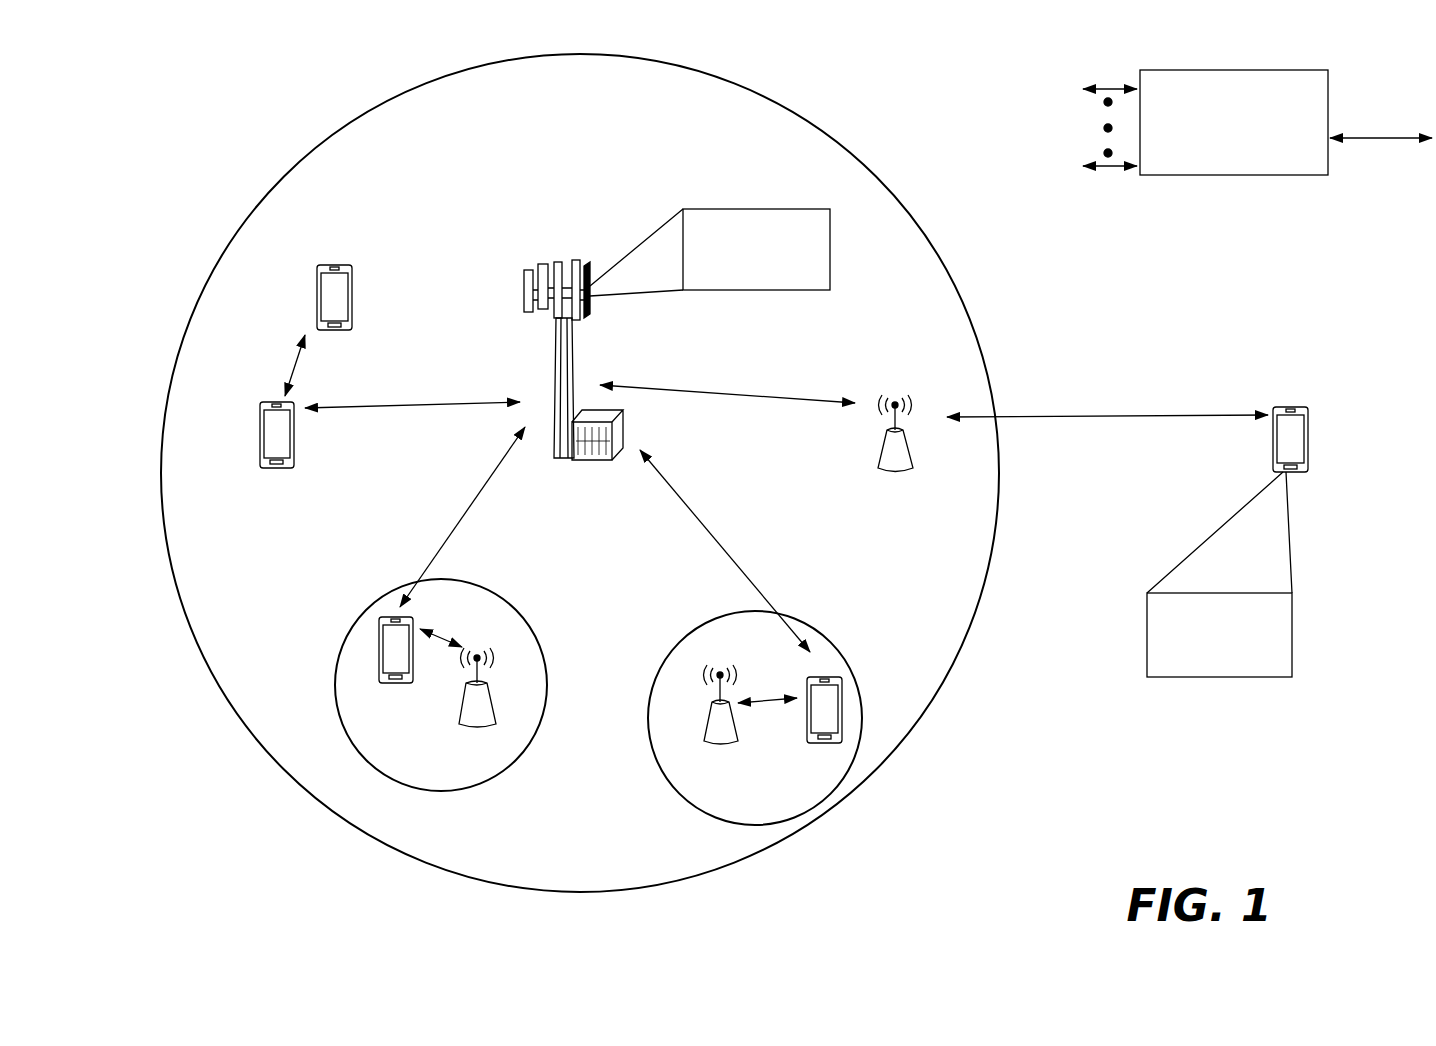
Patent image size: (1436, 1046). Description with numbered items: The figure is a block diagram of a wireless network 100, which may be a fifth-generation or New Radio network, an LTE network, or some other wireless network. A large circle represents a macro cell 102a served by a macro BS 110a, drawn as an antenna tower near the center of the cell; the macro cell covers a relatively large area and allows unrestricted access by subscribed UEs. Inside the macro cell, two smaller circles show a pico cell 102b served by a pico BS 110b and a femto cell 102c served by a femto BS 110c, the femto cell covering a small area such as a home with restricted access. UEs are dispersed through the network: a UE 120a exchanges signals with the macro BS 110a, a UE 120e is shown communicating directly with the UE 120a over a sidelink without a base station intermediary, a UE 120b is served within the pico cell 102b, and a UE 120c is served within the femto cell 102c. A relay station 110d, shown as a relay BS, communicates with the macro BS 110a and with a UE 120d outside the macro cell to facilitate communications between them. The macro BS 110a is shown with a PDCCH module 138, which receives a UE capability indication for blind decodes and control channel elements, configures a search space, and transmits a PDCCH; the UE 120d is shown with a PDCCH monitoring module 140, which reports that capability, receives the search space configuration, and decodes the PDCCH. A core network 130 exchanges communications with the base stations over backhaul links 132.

The wireless network 100 is at (243, 97).
The macro cell 102a is at (860, 160).
The pico cell 102b is at (533, 618).
The femto cell 102c is at (698, 633).
The macro BS 110a is at (568, 253).
The pico BS 110b is at (496, 708).
The femto BS 110c is at (708, 730).
The relay station 110d is at (895, 393).
The UE 120a is at (258, 434).
The UE 120b is at (388, 686).
The UE 120c is at (813, 745).
The UE 120d is at (1305, 480).
The UE 120e is at (315, 283).
The core network 130 is at (1206, 68).
The backhaul links 132 is at (1107, 85).
The PDCCH module 138 is at (745, 291).
The PDCCH monitoring module 140 is at (1222, 680).